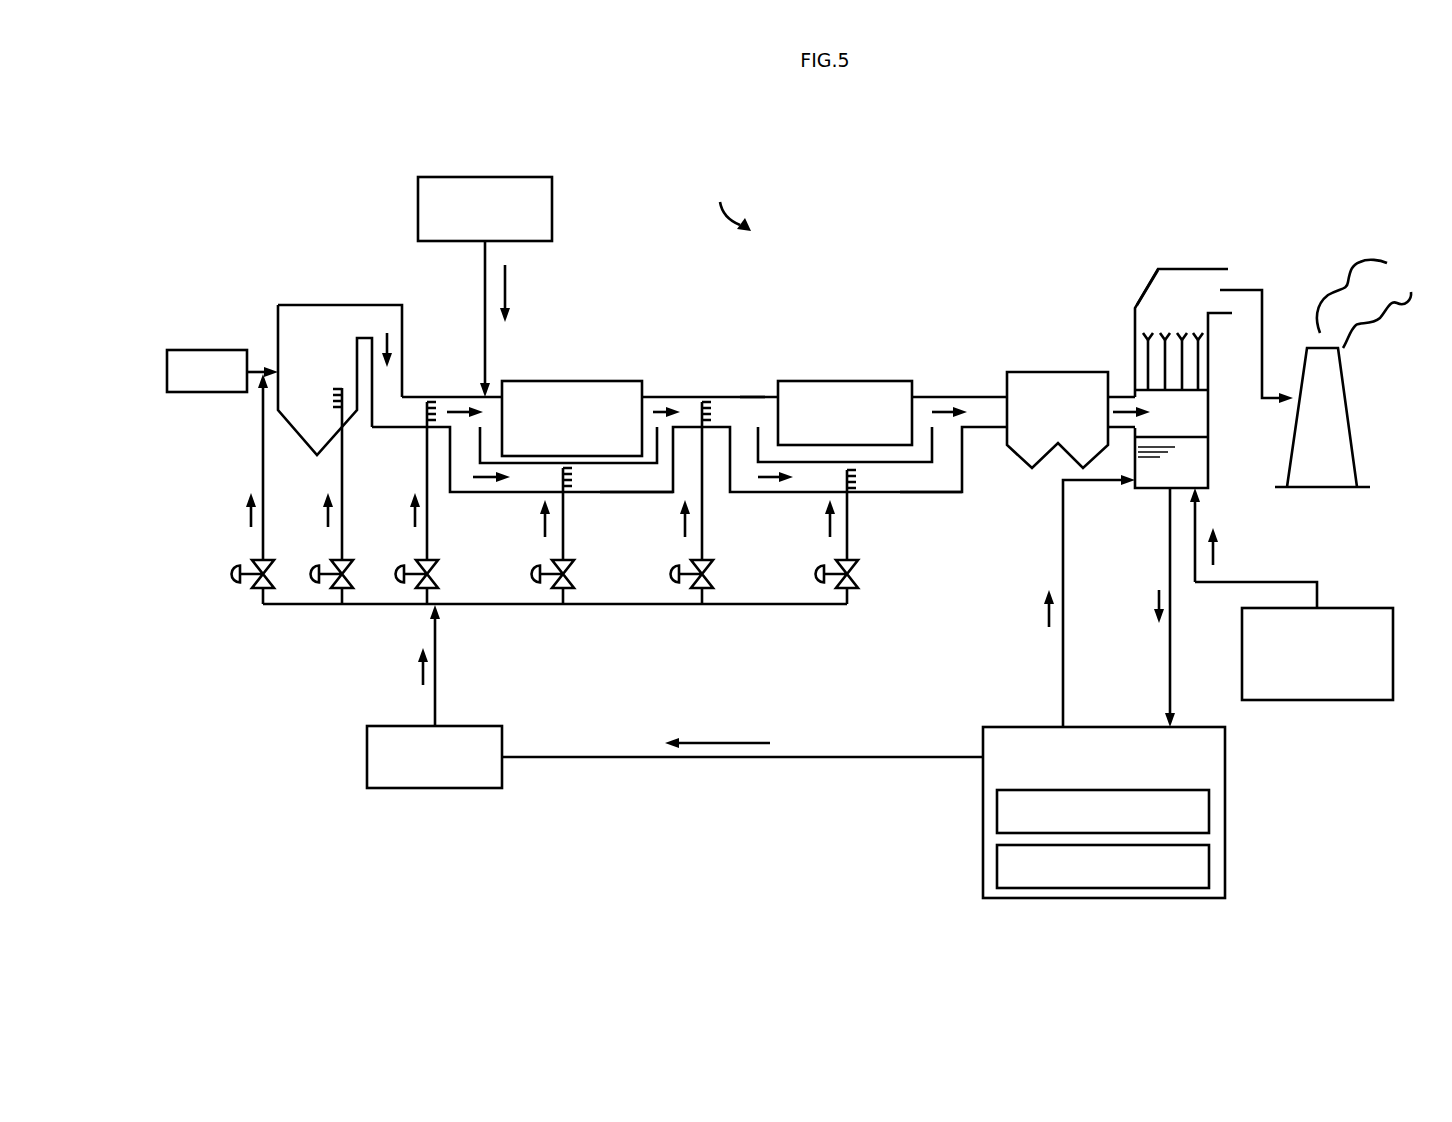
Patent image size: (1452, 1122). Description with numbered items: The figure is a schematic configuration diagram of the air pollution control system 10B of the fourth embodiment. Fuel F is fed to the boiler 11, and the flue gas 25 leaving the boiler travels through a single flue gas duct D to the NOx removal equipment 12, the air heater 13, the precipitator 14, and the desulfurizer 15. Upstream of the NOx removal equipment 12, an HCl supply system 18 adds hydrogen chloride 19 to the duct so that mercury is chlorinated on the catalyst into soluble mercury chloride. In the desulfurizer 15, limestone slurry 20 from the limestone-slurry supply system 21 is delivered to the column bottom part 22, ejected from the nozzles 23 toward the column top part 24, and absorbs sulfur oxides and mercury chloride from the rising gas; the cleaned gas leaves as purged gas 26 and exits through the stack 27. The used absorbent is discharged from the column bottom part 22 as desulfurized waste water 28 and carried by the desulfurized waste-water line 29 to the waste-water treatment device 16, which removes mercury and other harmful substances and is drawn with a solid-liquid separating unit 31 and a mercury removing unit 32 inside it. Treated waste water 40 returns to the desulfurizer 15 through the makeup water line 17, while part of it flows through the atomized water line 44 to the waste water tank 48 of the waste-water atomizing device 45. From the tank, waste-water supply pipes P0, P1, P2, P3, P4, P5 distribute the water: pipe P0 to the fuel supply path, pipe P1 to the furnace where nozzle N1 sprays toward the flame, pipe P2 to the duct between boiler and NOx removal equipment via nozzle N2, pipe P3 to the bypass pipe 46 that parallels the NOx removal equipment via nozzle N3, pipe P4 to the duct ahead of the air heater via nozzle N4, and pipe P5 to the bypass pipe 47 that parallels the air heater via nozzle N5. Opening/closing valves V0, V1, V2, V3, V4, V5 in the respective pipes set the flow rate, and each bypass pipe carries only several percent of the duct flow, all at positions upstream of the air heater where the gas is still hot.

The air pollution control system 10B is at (722, 184).
The fuel F is at (213, 350).
The boiler 11 is at (322, 305).
The flue gas 25 is at (1130, 400).
The flue gas duct D is at (752, 396).
The HCl supply system 18 is at (488, 177).
The hydrogen chloride 19 is at (510, 287).
The NOx removal equipment 12 is at (565, 381).
The air heater 13 is at (858, 381).
The precipitator 14 is at (1045, 372).
The desulfurizer 15 is at (1200, 269).
The column top part 24 is at (1148, 285).
The nozzles 23 is at (1208, 370).
The column bottom part 22 is at (1208, 447).
The purged gas 26 is at (1262, 332).
The stack 27 is at (1345, 377).
The limestone slurry 20 is at (1208, 478).
The limestone-slurry supply system 21 is at (1370, 608).
The desulfurized waste-water line 29 is at (1172, 635).
The desulfurized waste water 28 is at (1155, 610).
The makeup water line 17 is at (1062, 687).
The waste-water treatment device 16 is at (1227, 748).
The solid-liquid separating unit 31 is at (1210, 810).
The mercury removing unit 32 is at (1210, 862).
The atomized water line 44 is at (668, 760).
The waste water tank 48 is at (435, 788).
The waste-water atomizing device 45 is at (288, 703).
The waste-water supply pipe P0 is at (263, 470).
The waste-water supply pipe P1 is at (342, 478).
The waste-water supply pipe P2 is at (427, 478).
The waste-water supply pipe P3 is at (563, 555).
The waste-water supply pipe P4 is at (702, 548).
The waste-water supply pipe P5 is at (847, 547).
The nozzle N1 is at (337, 388).
The nozzle N2 is at (422, 422).
The nozzle N3 is at (572, 487).
The nozzle N4 is at (706, 400).
The nozzle N5 is at (856, 488).
The opening/closing valve V0 is at (233, 573).
The opening/closing valve V1 is at (317, 566).
The opening/closing valve V2 is at (396, 574).
The opening/closing valve V3 is at (532, 575).
The opening/closing valve V4 is at (671, 575).
The opening/closing valve V5 is at (816, 575).
The treated waste water 40 is at (248, 513).
The bypass pipe 46 is at (630, 493).
The bypass pipe 47 is at (964, 470).